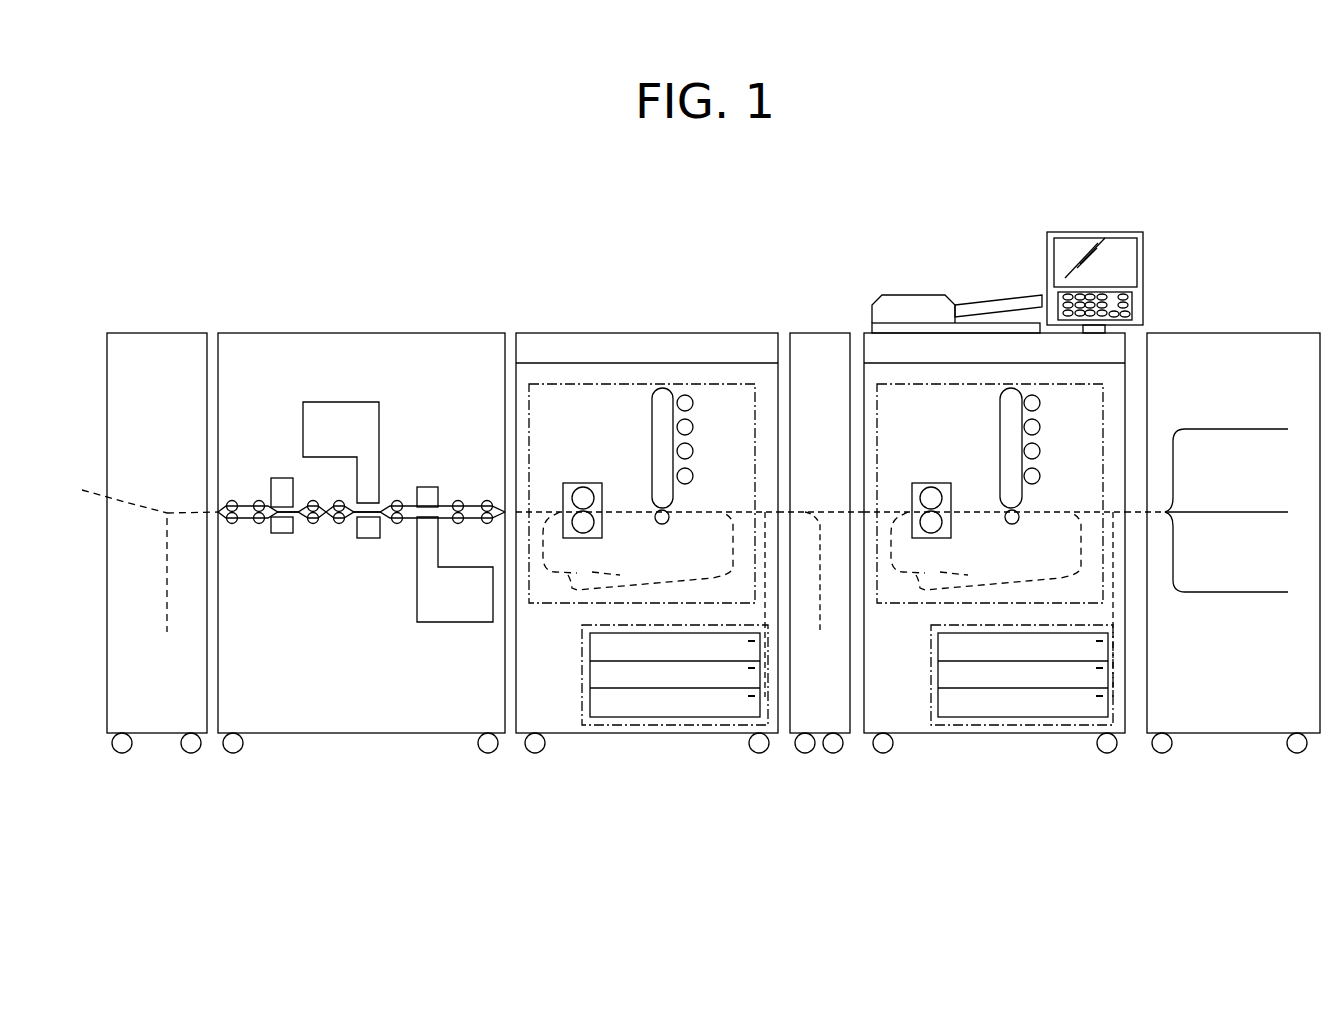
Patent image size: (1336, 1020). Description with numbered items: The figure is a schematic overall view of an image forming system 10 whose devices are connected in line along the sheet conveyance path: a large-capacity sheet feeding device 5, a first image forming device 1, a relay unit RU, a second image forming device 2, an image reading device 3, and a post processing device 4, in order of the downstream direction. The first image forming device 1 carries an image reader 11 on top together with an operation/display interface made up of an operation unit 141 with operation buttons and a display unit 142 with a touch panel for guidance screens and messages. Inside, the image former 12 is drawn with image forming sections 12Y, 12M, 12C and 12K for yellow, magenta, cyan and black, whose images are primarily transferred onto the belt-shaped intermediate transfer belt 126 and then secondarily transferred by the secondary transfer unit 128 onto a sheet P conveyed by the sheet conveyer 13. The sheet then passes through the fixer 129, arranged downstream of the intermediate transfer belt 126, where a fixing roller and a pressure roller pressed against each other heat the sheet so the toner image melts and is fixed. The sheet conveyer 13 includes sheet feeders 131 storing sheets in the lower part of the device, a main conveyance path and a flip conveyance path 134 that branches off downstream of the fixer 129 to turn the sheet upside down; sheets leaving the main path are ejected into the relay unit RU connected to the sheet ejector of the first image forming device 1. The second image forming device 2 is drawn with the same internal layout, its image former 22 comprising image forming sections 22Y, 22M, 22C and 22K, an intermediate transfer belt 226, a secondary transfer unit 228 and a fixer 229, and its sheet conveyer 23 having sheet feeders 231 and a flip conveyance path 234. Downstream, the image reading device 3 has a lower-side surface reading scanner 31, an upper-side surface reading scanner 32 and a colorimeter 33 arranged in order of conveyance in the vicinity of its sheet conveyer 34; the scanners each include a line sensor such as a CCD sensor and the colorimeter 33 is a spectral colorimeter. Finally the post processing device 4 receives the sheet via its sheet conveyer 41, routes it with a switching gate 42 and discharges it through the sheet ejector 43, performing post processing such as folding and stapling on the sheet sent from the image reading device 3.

The image forming system 10 is at (835, 198).
The first image forming device 1 is at (980, 216).
The image reader 11 is at (932, 296).
The image former 12 is at (1027, 383).
The image forming section 12Y is at (1040, 403).
The image forming section 12M is at (1040, 427).
The image forming section 12C is at (1040, 451).
The image forming section 12K is at (1040, 476).
The intermediate transfer belt 126 is at (1000, 448).
The secondary transfer unit 128 is at (1018, 522).
The fixer 129 is at (935, 502).
The sheet conveyer 13 is at (1050, 510).
The sheet feeders 131 is at (1117, 668).
The reverse conveyance path 134 is at (953, 568).
The operation unit 141 is at (1128, 308).
The display unit 142 is at (1120, 267).
The relay unit RU is at (810, 333).
The second image forming device 2 is at (692, 323).
The image former 22 is at (707, 383).
The photoreceptor drum (yellow) 22Y is at (693, 403).
The photoreceptor drum (magenta) 22M is at (693, 427).
The photoreceptor drum (cyan) 22C is at (693, 451).
The photoreceptor drum (black) 22K is at (693, 476).
The intermediate transfer belt 226 is at (652, 448).
The secondary transfer roller 228 is at (668, 521).
The fixing unit 229 is at (590, 498).
The sheet conveyer 23 is at (697, 509).
The sheet feed tray 231 is at (769, 672).
The reverse conveyance path 234 is at (595, 570).
The image reading device 3 is at (345, 733).
The lower-side surface reading scanner 31 is at (455, 622).
The upper-side surface reading scanner 32 is at (348, 402).
The colorimeter 33 is at (275, 477).
The sheet conveyer 34 is at (338, 523).
The post processing device 4 is at (163, 733).
The sheet conveyer 41 is at (190, 510).
The switching gate 42 is at (167, 597).
The sheet ejector 43 is at (125, 500).
The large-capacity sheet feeding device 5 is at (1248, 733).